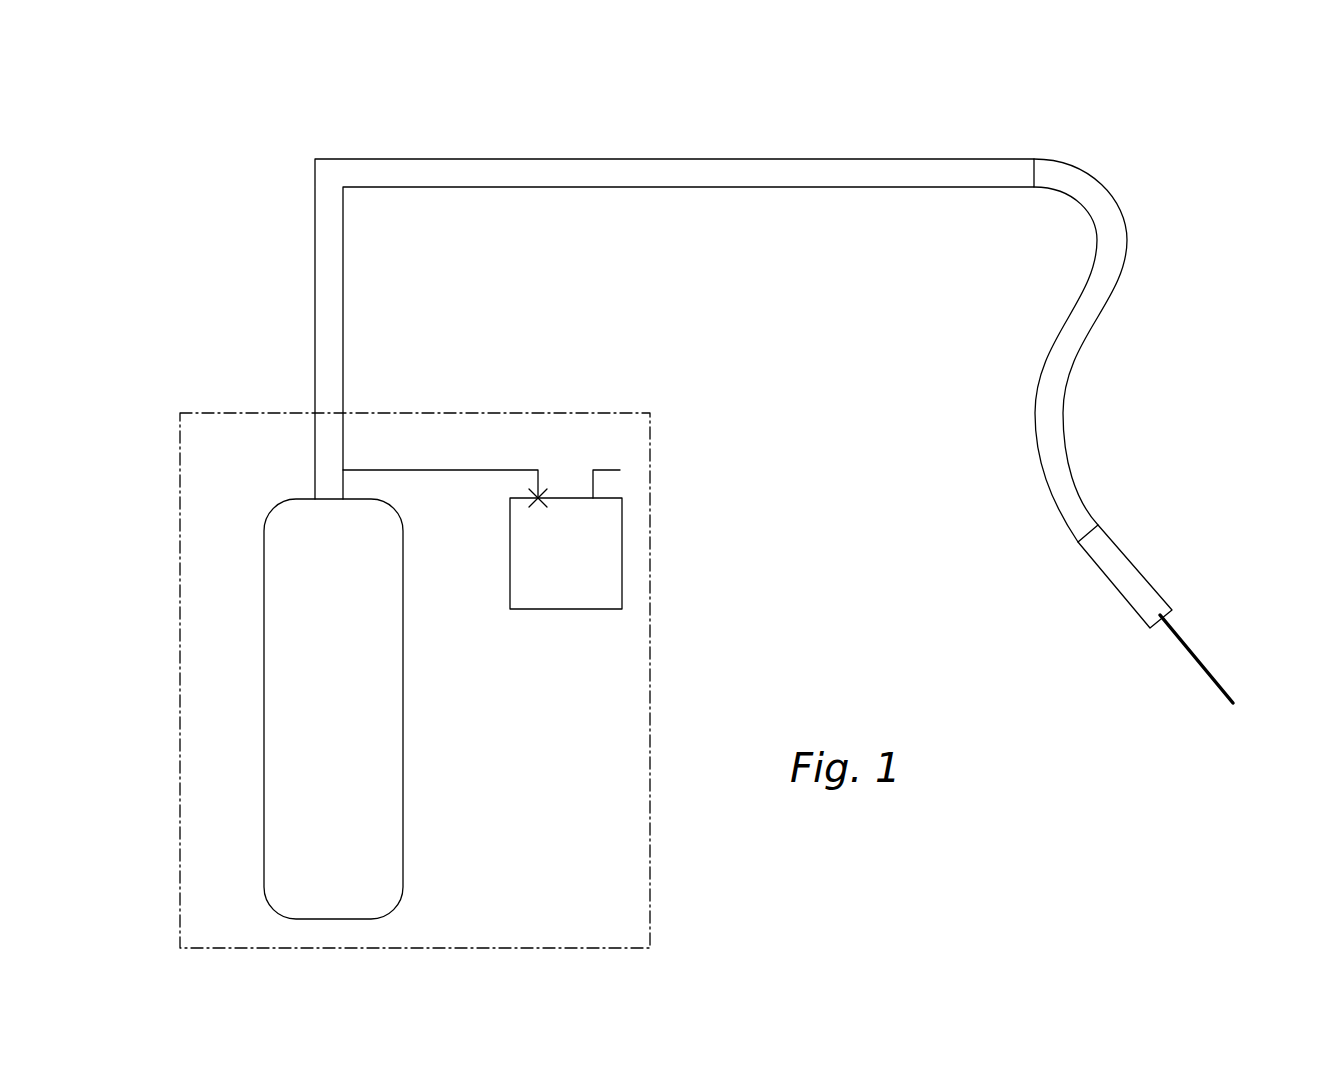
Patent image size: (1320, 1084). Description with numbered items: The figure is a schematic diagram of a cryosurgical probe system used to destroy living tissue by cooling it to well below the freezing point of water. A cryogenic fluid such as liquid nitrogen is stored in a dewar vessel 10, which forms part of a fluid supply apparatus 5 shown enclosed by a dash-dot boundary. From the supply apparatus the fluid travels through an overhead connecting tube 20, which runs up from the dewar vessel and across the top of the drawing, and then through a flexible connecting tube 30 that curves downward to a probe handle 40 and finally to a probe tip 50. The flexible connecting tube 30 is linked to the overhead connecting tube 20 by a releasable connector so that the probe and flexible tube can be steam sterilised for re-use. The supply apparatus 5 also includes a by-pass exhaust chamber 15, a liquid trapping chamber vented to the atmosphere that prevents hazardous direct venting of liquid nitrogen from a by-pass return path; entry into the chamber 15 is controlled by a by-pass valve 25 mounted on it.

The fluid supply apparatus 5 is at (652, 590).
The dewar vessel 10 is at (403, 795).
The by-pass exhaust chamber 15 is at (535, 610).
The overhead connecting tube 20 is at (650, 159).
The by-pass valve 25 is at (542, 492).
The flexible connecting tube 30 is at (1065, 405).
The probe handle 40 is at (1147, 580).
The probe tip 50 is at (1197, 655).